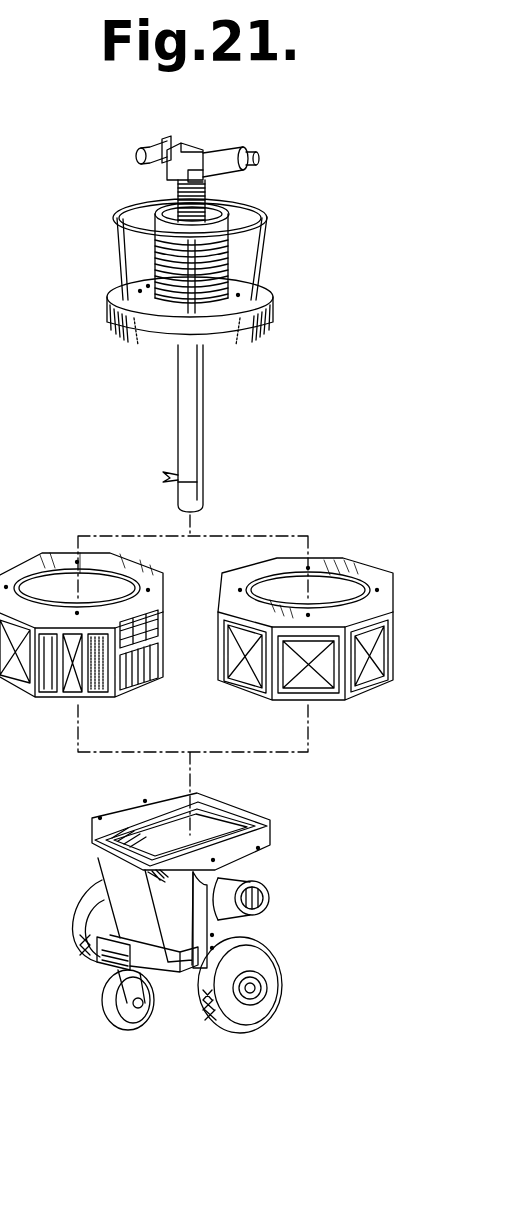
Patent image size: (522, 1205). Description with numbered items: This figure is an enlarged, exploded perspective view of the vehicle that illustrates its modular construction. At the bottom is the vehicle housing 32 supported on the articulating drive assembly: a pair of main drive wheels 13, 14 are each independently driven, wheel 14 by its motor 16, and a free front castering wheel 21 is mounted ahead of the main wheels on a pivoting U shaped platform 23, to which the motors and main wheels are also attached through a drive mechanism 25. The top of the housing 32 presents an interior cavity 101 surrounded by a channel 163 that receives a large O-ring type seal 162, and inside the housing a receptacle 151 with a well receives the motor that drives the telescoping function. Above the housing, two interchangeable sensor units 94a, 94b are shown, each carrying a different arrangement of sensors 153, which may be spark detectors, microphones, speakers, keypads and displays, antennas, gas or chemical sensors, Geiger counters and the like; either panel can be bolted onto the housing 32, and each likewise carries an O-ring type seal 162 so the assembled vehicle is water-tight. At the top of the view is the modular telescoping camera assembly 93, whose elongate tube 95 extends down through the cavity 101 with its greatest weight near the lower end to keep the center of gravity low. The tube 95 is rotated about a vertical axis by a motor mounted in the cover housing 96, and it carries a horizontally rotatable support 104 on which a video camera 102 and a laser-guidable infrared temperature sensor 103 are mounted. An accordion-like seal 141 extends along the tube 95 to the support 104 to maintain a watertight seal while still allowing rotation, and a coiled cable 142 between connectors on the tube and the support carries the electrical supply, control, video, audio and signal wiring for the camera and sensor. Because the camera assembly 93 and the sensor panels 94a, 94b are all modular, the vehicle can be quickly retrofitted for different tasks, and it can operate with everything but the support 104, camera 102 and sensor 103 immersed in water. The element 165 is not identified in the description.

The main drive wheel 13 is at (78, 960).
The main drive wheel 14 is at (248, 1032).
The motor 16 is at (258, 893).
The front castering wheel 21 is at (128, 1030).
The pivoting U shaped platform 23 is at (172, 978).
The drive mechanism 25 is at (198, 910).
The vehicle housing 32 is at (110, 874).
The modular telescoping camera assembly 93 is at (112, 336).
The sensor unit 94a is at (60, 556).
The sensor unit 94b is at (355, 563).
The elongate tube 95 is at (186, 385).
The cover housing 96 is at (265, 306).
The interior cavity 101 is at (228, 822).
The video camera 102 is at (262, 155).
The infrared temperature sensor 103 is at (140, 150).
The horizontally rotatable support 104 is at (195, 168).
The accordion-like seal 141 is at (177, 186).
The coiled cable 142 is at (154, 268).
The receptacle 151 is at (180, 505).
The sensors 153 is at (48, 699).
The O-ring type seal 162 is at (125, 575).
The channel 163 is at (143, 815).
The plate rim 165 is at (100, 836).